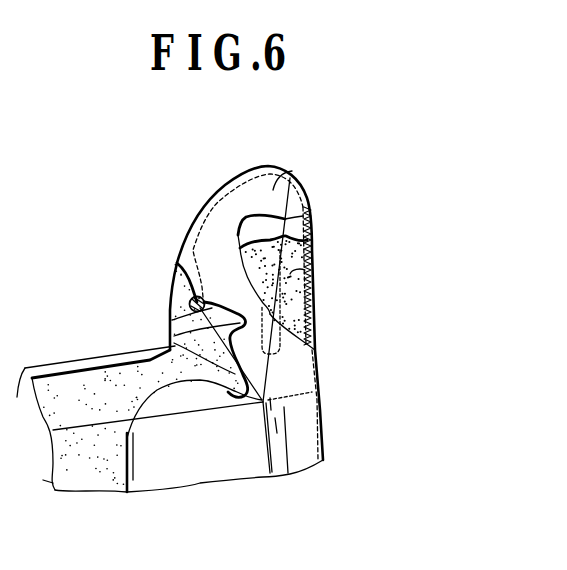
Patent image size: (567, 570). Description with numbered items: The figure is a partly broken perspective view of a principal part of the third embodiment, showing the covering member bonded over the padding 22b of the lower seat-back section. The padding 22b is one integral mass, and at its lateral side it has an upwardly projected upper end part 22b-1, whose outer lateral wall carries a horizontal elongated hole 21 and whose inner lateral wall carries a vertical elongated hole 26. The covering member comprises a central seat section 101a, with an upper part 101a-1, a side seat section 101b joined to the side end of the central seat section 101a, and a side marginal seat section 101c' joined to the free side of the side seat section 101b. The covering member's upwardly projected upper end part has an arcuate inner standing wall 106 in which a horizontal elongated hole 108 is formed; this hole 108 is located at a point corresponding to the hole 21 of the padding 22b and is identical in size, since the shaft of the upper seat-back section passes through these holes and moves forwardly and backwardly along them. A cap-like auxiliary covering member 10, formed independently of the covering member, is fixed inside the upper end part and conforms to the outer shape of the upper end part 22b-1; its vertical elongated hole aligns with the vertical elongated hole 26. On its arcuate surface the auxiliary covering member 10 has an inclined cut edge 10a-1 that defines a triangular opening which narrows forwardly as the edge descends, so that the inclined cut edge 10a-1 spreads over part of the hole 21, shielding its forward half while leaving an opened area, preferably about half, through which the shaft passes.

The inner standing wall 106 is at (220, 237).
The side marginal seat section 101c' is at (314, 168).
The auxiliary covering member 10 is at (290, 229).
The upwardly projected upper end part 22b-1 is at (305, 270).
The vertical elongated hole 26 is at (273, 312).
The horizontal elongated hole 21 is at (190, 301).
The horizontal elongated hole 108 is at (172, 308).
The inclined cut edge 10a-1 is at (170, 332).
The upper part of central seat section 101a-1 is at (67, 367).
The padding 22b is at (98, 472).
The central seat section 101a is at (200, 470).
The side seat section 101b is at (305, 442).